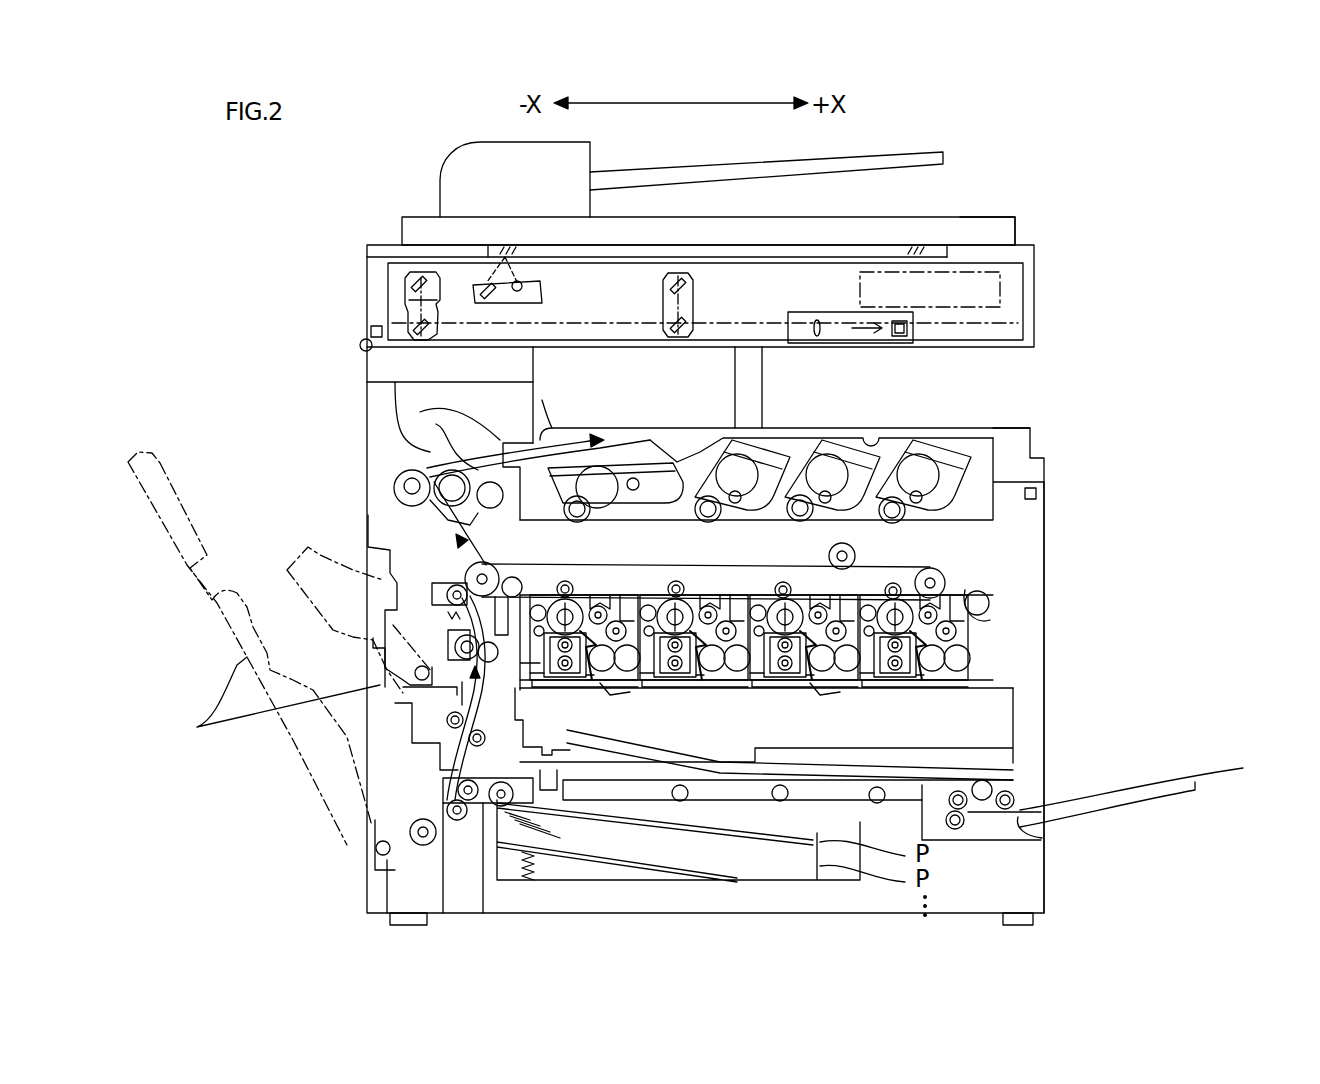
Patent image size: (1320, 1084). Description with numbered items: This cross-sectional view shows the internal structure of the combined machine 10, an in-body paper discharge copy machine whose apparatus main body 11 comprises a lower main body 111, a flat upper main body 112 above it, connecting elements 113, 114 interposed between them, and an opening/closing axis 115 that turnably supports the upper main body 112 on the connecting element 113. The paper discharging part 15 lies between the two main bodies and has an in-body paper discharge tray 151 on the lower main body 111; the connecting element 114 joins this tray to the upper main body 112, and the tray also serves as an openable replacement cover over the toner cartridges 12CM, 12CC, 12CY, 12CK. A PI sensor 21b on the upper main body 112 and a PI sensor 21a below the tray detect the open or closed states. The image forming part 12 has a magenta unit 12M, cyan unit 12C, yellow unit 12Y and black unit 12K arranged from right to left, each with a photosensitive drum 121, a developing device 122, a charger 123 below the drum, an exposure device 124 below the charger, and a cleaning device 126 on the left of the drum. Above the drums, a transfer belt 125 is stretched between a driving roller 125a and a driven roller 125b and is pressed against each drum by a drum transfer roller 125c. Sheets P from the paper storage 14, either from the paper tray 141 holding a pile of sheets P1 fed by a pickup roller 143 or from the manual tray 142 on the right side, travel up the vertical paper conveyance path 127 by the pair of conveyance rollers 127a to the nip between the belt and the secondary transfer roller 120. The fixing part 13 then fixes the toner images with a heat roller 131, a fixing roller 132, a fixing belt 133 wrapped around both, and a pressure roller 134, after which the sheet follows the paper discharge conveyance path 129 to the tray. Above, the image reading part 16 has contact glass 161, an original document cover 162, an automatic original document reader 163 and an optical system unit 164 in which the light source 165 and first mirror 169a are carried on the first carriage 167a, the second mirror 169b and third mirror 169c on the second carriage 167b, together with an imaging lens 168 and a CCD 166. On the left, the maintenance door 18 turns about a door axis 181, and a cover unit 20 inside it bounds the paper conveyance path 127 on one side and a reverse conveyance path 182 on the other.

The combined machine 10 is at (1080, 223).
The apparatus main body 11 is at (1198, 360).
The lower main body 111 is at (1047, 512).
The upper main body 112 is at (1040, 323).
The connecting element 113 is at (700, 363).
The connecting element 114 is at (744, 360).
The opening/closing axis 115 is at (362, 344).
The image forming part 12 is at (887, 406).
The black unit 12K is at (586, 592).
The yellow unit 12Y is at (662, 592).
The cyan unit 12C is at (772, 592).
The magenta unit 12M is at (892, 592).
The toner cartridge 12CK is at (616, 508).
The toner cartridge 12CY is at (740, 505).
The toner cartridge 12CC is at (833, 506).
The toner cartridge 12CM is at (954, 473).
The fixing part 13 is at (236, 427).
The heat roller 131 is at (404, 480).
The fixing roller 132 is at (440, 488).
The fixing belt 133 is at (482, 495).
The pressure roller 134 is at (430, 518).
The paper storage 14 is at (1193, 825).
The paper tray 141 is at (834, 880).
The manual tray 142 is at (1078, 817).
The paper discharging part 15 is at (616, 388).
The image reading part 16 is at (1040, 289).
The contact glass 161 is at (832, 246).
The original document cover 162 is at (978, 232).
The automatic original document reader 163 is at (586, 157).
The optical system unit 164 is at (756, 307).
The light source 165 is at (519, 282).
The CCD 166 is at (915, 332).
The first carriage 167a is at (543, 297).
The second carriage 167b is at (440, 318).
The imaging lens 168 is at (817, 327).
The first mirror 169a is at (482, 288).
The second mirror 169b is at (418, 283).
The third mirror 169c is at (421, 330).
The maintenance door 18 is at (273, 701).
The cover unit 20 is at (337, 612).
The PI sensor 21a is at (1038, 493).
The PI sensor 21b is at (376, 326).
The secondary transfer roller 120 is at (395, 575).
The photosensitive drum 121 is at (1020, 592).
The developing device 122 is at (1020, 613).
The charger 123 is at (1020, 648).
The exposure device 124 is at (1020, 740).
The transfer belt 125 is at (1020, 545).
The driving roller 125a is at (471, 565).
The driven roller 125b is at (1020, 566).
The drum transfer roller 125c is at (889, 592).
The cleaning device 126 is at (1020, 672).
The paper conveyance path 127 is at (478, 700).
The pair of conveyance rollers 127a is at (450, 795).
The paper discharge conveyance path 129 is at (416, 420).
The pickup roller 143 is at (492, 805).
The in-body paper discharge tray 151 is at (917, 435).
The door axis 181 is at (377, 848).
The reverse conveyance path 182 is at (390, 578).
The sheet P is at (498, 475).
The pile of sheets P1 is at (938, 842).